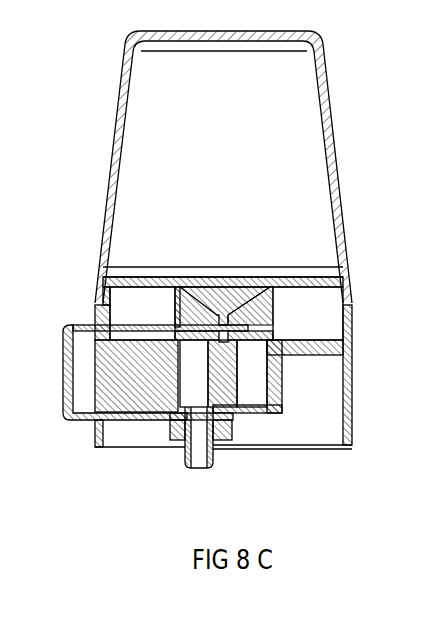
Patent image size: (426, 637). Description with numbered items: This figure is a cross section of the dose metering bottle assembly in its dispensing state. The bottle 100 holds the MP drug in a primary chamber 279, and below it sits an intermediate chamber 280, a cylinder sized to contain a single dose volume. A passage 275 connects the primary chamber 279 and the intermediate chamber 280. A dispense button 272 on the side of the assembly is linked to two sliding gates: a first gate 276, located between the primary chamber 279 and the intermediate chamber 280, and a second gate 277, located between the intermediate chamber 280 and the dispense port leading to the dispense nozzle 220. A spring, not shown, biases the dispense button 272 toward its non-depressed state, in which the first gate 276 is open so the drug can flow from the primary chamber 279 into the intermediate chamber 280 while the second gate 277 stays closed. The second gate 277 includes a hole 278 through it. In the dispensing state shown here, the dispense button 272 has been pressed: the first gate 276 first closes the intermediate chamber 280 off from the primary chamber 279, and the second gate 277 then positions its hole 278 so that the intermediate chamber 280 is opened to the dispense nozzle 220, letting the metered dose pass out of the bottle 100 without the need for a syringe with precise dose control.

The bottle 100 is at (120, 105).
The primary chamber 279 is at (245, 183).
The gate 1 276 is at (215, 318).
The intermediate chamber 280 is at (155, 343).
The dispense button 272 is at (64, 350).
The passage 275 is at (223, 340).
The gate 2 277 is at (118, 420).
The hole 278 is at (185, 440).
The dispense nozzle 220 is at (213, 468).